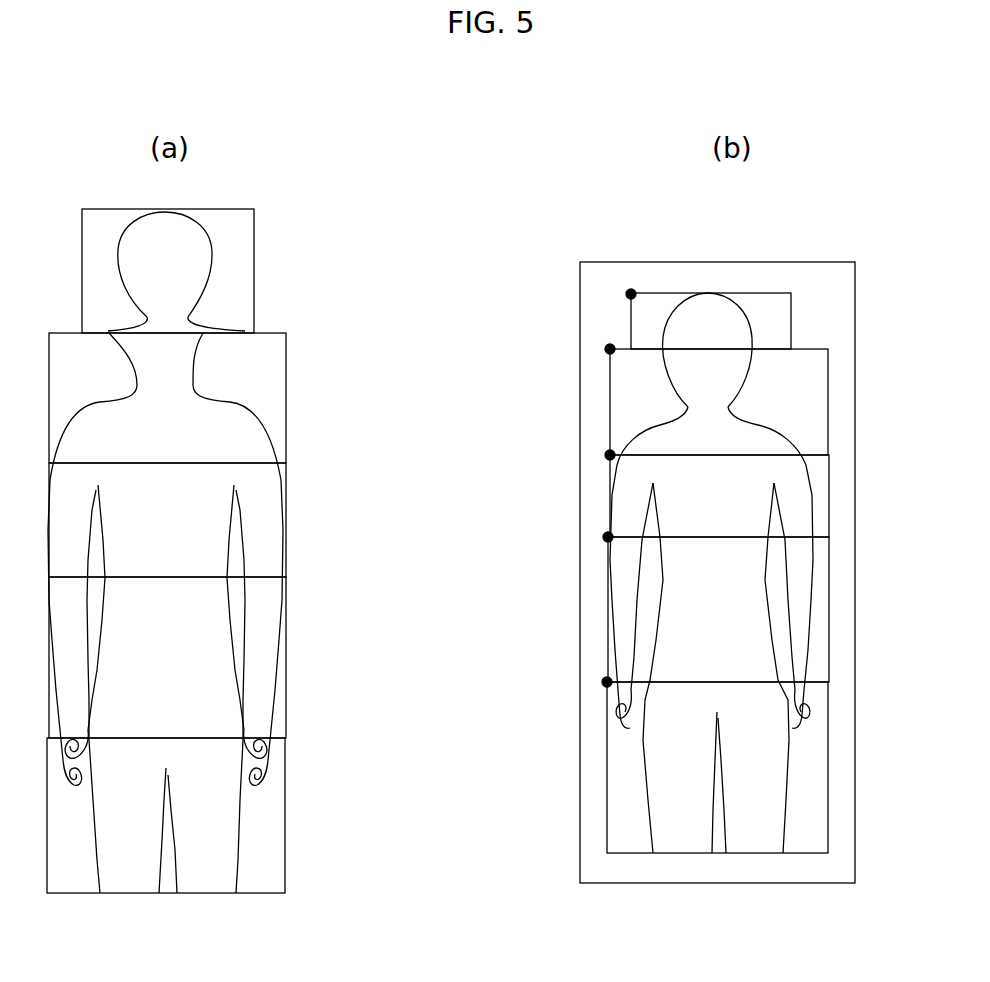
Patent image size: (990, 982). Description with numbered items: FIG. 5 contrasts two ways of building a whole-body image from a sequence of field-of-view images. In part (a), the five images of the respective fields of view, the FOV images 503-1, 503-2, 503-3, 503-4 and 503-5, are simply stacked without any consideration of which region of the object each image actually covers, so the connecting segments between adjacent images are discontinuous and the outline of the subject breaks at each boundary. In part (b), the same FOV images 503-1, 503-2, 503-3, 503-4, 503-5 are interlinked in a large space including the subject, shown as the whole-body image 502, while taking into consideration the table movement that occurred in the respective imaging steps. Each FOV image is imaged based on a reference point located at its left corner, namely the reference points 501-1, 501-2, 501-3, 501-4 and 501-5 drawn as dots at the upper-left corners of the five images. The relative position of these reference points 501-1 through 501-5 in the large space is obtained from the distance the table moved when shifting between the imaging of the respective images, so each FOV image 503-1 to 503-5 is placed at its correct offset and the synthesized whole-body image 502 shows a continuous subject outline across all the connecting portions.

The reference point 501-1 is at (627, 295).
The reference point 501-2 is at (606, 351).
The reference point 501-3 is at (606, 456).
The reference point 501-4 is at (604, 538).
The reference point 501-5 is at (603, 683).
The whole-body image 502 is at (856, 278).
The FOV image 503-1 is at (240, 287).
The FOV image 503-2 is at (266, 380).
The FOV image 503-3 is at (270, 527).
The FOV image 503-4 is at (255, 657).
The FOV image 503-5 is at (258, 818).